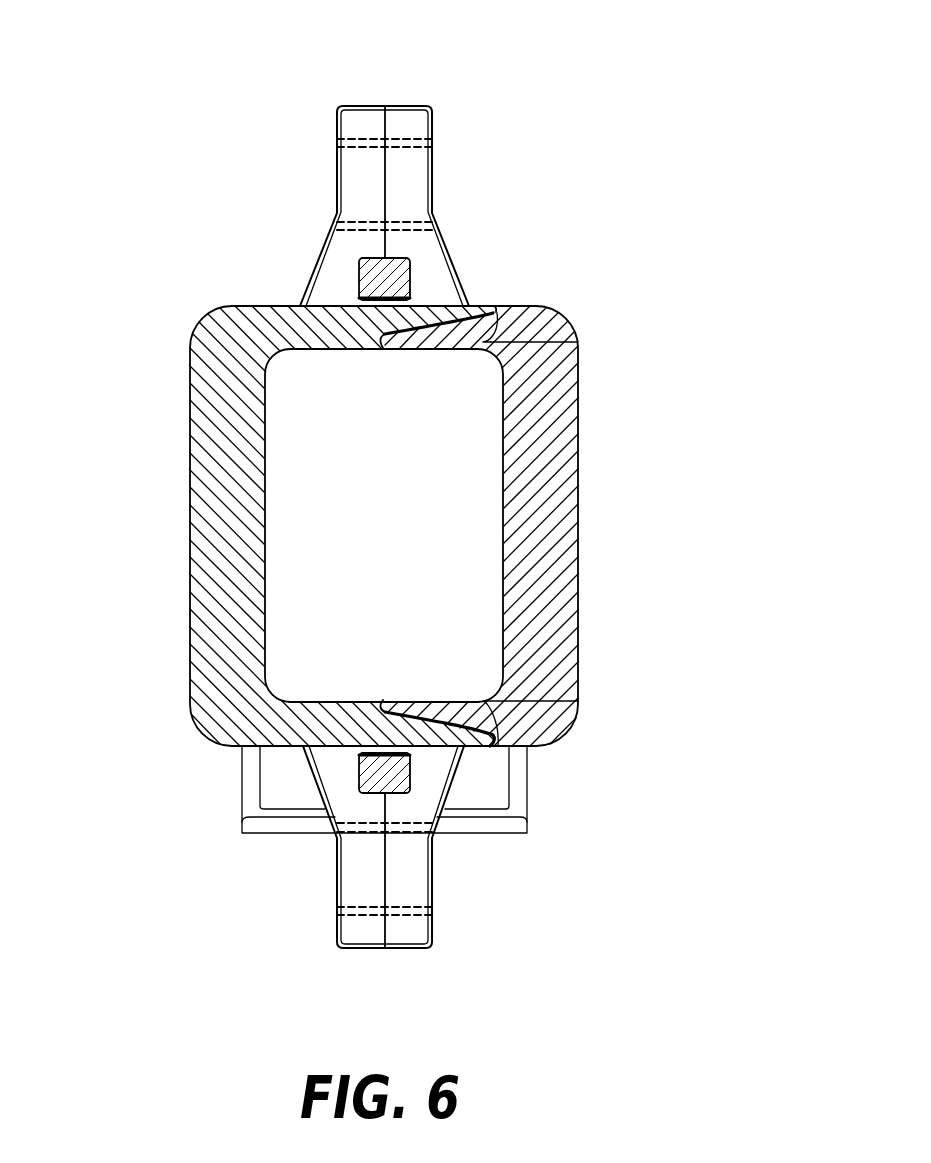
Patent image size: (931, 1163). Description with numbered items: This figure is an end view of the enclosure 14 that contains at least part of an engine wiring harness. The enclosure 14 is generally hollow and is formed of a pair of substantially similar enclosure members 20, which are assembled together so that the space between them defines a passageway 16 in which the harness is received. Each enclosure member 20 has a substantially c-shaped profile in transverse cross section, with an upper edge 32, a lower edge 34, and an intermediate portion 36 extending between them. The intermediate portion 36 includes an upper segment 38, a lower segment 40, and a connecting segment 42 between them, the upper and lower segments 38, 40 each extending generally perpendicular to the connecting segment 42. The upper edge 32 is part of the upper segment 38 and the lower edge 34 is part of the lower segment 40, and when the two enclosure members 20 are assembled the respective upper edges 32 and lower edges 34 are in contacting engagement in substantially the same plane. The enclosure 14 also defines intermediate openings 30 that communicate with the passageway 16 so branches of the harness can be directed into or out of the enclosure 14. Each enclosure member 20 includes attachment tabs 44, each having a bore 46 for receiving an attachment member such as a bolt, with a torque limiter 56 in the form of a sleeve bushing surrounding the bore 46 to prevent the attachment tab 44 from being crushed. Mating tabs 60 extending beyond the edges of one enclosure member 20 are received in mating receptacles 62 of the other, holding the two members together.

The enclosure 14 is at (682, 168).
The passageway 16 is at (391, 509).
The enclosure member 20 is at (229, 167).
The intermediate opening 30 is at (250, 836).
The upper edge 32 is at (378, 348).
The lower edge 34 is at (378, 704).
The intermediate portion 36 is at (136, 466).
The upper segment 38 is at (295, 325).
The lower segment 40 is at (240, 718).
The connecting segment 42 is at (215, 545).
The attachment tab 44 is at (349, 95).
The bore 46 is at (432, 147).
The torque limiter 56 is at (337, 147).
The mating tab 60 is at (497, 307).
The mating receptacle 62 is at (566, 330).